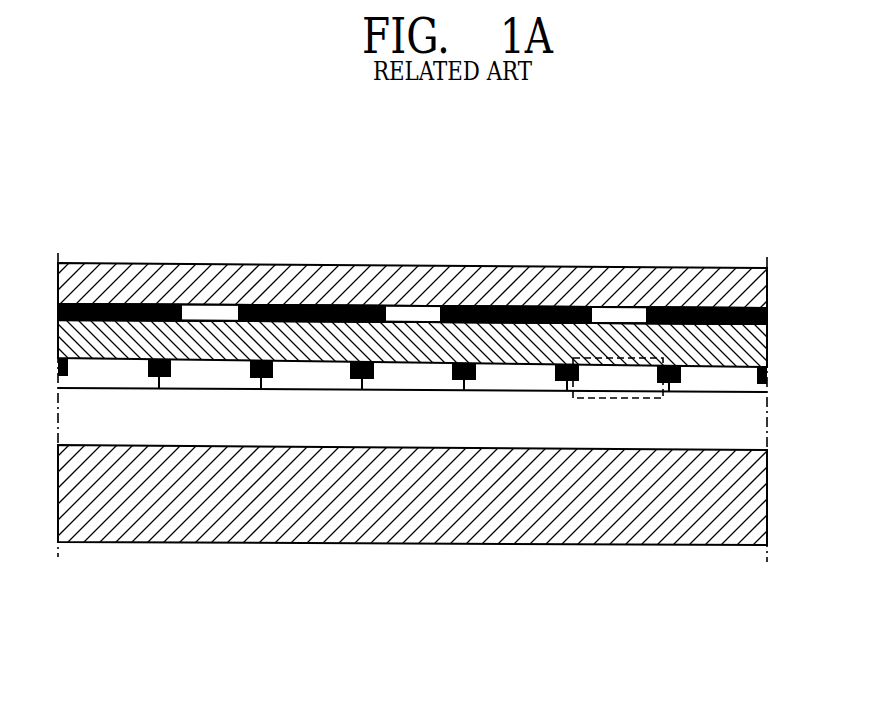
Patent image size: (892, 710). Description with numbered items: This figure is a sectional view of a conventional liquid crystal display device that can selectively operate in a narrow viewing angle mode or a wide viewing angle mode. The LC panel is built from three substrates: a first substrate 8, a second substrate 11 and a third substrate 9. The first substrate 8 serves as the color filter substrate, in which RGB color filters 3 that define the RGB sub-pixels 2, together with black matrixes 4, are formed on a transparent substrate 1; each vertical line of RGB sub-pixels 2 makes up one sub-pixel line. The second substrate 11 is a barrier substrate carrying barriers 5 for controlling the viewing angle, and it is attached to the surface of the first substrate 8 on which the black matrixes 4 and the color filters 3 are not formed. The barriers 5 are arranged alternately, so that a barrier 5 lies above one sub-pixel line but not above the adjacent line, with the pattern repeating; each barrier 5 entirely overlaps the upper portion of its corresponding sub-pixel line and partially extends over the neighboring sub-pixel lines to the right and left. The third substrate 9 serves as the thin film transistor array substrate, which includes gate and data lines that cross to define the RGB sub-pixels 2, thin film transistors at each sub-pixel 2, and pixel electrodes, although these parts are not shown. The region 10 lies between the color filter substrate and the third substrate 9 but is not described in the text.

The transparent substrate 1 is at (763, 342).
The RGB sub-pixel 2 is at (621, 358).
The RGB color filter 3 is at (440, 388).
The black matrix 4 is at (768, 371).
The barrier 5 is at (717, 310).
The first substrate 8 is at (426, 358).
The third substrate 9 is at (775, 450).
The gap space 10 is at (775, 393).
The second substrate 11 is at (409, 265).